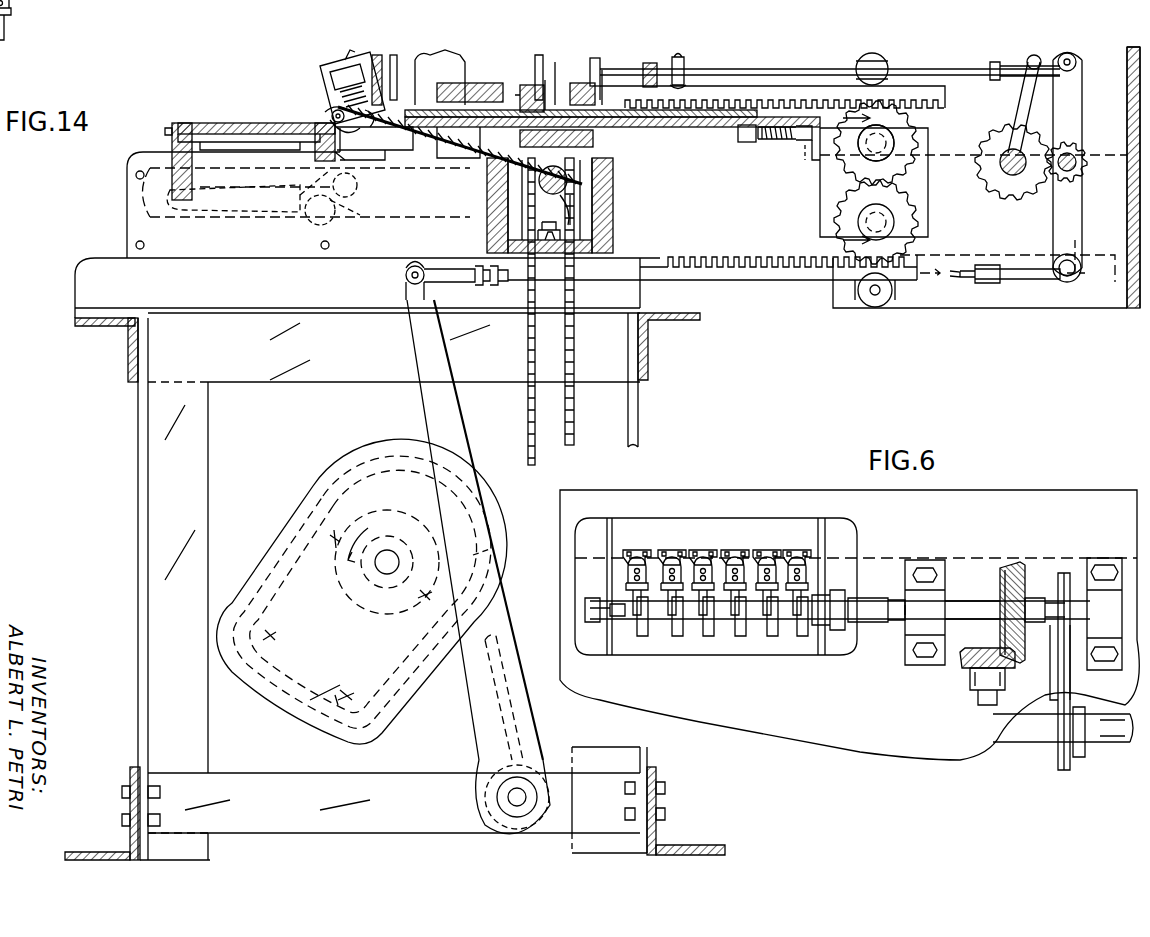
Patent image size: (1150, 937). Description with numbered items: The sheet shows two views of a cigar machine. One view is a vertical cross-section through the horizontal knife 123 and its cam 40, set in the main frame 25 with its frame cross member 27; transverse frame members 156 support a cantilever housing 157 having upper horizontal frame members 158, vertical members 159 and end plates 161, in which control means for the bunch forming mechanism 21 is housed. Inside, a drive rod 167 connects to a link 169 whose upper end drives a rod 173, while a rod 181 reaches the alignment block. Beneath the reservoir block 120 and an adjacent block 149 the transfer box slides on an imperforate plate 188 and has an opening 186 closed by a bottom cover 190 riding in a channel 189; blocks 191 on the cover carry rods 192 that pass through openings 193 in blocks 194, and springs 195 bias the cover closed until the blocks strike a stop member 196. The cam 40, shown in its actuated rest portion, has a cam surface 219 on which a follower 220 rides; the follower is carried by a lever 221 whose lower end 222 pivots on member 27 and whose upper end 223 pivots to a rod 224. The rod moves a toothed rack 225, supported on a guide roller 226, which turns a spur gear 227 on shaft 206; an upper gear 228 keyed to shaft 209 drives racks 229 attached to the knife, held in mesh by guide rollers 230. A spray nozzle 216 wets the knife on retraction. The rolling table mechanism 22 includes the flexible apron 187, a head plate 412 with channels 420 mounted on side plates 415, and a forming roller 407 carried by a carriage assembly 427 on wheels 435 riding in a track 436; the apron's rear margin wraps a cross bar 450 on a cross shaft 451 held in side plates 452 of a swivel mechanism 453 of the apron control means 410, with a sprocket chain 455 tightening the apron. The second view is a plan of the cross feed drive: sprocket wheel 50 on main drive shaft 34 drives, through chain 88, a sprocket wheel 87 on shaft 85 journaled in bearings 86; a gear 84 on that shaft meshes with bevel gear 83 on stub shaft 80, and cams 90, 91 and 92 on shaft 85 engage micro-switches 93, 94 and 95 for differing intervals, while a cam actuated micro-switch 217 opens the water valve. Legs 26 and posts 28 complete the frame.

In FIG. 14, the bunch forming mechanism 21 is at (730, 78).
In FIG. 14, the rolling table mechanism 22 is at (260, 91).
In FIG. 14, the main frame 25 is at (120, 416).
In FIG. 14, the angle bracket 26 is at (128, 352).
In FIG. 14, the frame cross member 27 is at (240, 372).
In FIG. 14, the frame post 28 is at (208, 472).
In FIG. 14, the main drive shaft 34 is at (385, 575).
In FIG. 6, the main drive shaft 34 is at (1022, 742).
In FIG. 14, the cam 40 is at (315, 487).
In FIG. 6, the sprocket wheel 50 is at (1080, 758).
In FIG. 6, the stub shaft 80 is at (980, 698).
In FIG. 6, the bevel gear 83 is at (965, 658).
In FIG. 6, the gear 84 is at (1003, 596).
In FIG. 6, the shaft 85 is at (980, 604).
In FIG. 6, the bearings 86 is at (918, 626).
In FIG. 6, the sprocket wheel 87 is at (1066, 573).
In FIG. 6, the chain 88 is at (1070, 705).
In FIG. 6, the cam 90 is at (803, 637).
In FIG. 6, the cam 91 is at (770, 636).
In FIG. 6, the cam 92 is at (737, 636).
In FIG. 6, the micro-switch 93 is at (805, 558).
In FIG. 6, the micro-switch 94 is at (755, 555).
In FIG. 6, the micro-switch 95 is at (722, 552).
In FIG. 14, the reservoir block 120 is at (520, 88).
In FIG. 14, the horizontal knife 123 is at (600, 70).
In FIG. 14, the block 149 is at (455, 87).
In FIG. 14, the frame member 156 is at (104, 258).
In FIG. 14, the cantilever housing 157 is at (1083, 318).
In FIG. 14, the upper horizontal frame members 158 is at (628, 199).
In FIG. 14, the vertical members 159 is at (900, 78).
In FIG. 14, the end plates 161 is at (1127, 213).
In FIG. 14, the drive rod 167 is at (985, 277).
In FIG. 14, the link 169 is at (1063, 233).
In FIG. 14, the rod 173 is at (972, 72).
In FIG. 14, the rod 181 is at (645, 66).
In FIG. 14, the opening 186 is at (552, 105).
In FIG. 14, the flexible apron 187 is at (378, 139).
In FIG. 14, the imperforate plate 188 is at (450, 145).
In FIG. 14, the channel 189 is at (613, 166).
In FIG. 14, the bottom cover 190 is at (660, 122).
In FIG. 14, the blocks 191 is at (738, 135).
In FIG. 14, the rods 192 is at (775, 140).
In FIG. 14, the openings 193 is at (807, 142).
In FIG. 14, the blocks 194 is at (818, 160).
In FIG. 14, the springs 195 is at (762, 140).
In FIG. 14, the stop member 196 is at (592, 137).
In FIG. 14, the shaft 206 is at (895, 228).
In FIG. 14, the shaft 209 is at (880, 153).
In FIG. 14, the spray nozzle 216 is at (686, 62).
In FIG. 6, the cam actuated micro-switch 217 is at (692, 532).
In FIG. 14, the cam surface 219 is at (410, 712).
In FIG. 14, the follower 220 is at (480, 552).
In FIG. 14, the lever 221 is at (432, 421).
In FIG. 14, the lower end 222 is at (500, 800).
In FIG. 14, the upper end 223 is at (406, 276).
In FIG. 14, the rod 224 is at (455, 284).
In FIG. 14, the toothed rack 225 is at (745, 262).
In FIG. 14, the guide roller 226 is at (875, 307).
In FIG. 14, the spur gear 227 is at (900, 207).
In FIG. 14, the upper gear 228 is at (905, 137).
In FIG. 14, the racks 229 is at (797, 97).
In FIG. 14, the guide rollers 230 is at (888, 60).
In FIG. 14, the forming roller 407 is at (330, 116).
In FIG. 14, the apron control means 410 is at (630, 204).
In FIG. 14, the head plate 412 is at (240, 123).
In FIG. 14, the side plates 415 is at (190, 222).
In FIG. 14, the channels 420 is at (190, 124).
In FIG. 14, the carriage assembly 427 is at (310, 76).
In FIG. 14, the wheels 435 is at (300, 222).
In FIG. 14, the track 436 is at (228, 230).
In FIG. 14, the cross bar 450 is at (613, 182).
In FIG. 14, the cross shaft 451 is at (614, 206).
In FIG. 14, the side plates 452 is at (600, 218).
In FIG. 14, the swivel mechanism 453 is at (612, 238).
In FIG. 14, the sprocket chain 455 is at (528, 408).